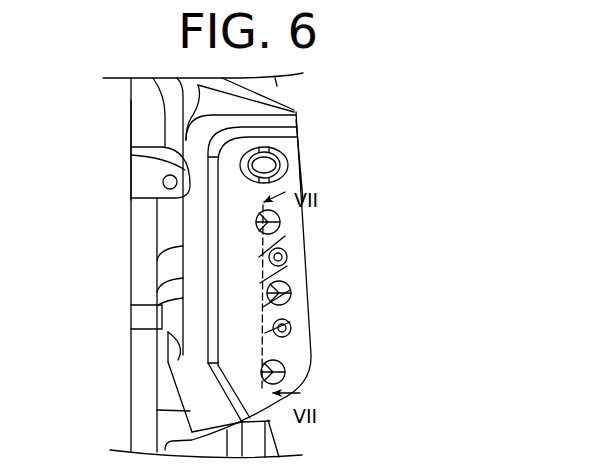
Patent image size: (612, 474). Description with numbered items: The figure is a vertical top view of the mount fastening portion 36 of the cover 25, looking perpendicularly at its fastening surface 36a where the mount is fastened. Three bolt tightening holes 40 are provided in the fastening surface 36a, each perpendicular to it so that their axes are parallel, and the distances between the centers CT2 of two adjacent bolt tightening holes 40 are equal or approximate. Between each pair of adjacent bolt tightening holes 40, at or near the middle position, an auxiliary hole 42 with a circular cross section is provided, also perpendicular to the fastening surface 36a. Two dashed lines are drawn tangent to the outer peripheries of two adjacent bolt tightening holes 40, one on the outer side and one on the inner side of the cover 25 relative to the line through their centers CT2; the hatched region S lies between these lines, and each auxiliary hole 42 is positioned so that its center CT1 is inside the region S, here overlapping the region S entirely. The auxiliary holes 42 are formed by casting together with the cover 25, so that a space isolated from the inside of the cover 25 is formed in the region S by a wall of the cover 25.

The cover 25 is at (104, 180).
The mount fastening portion 36 is at (318, 166).
The fastening surface 36a is at (302, 183).
The bolt tightening hole 40 is at (281, 221).
The auxiliary hole 42 is at (288, 258).
The center of auxiliary hole CT1 is at (300, 246).
The center of bolt tightening hole CT2 is at (257, 217).
The region S is at (269, 258).